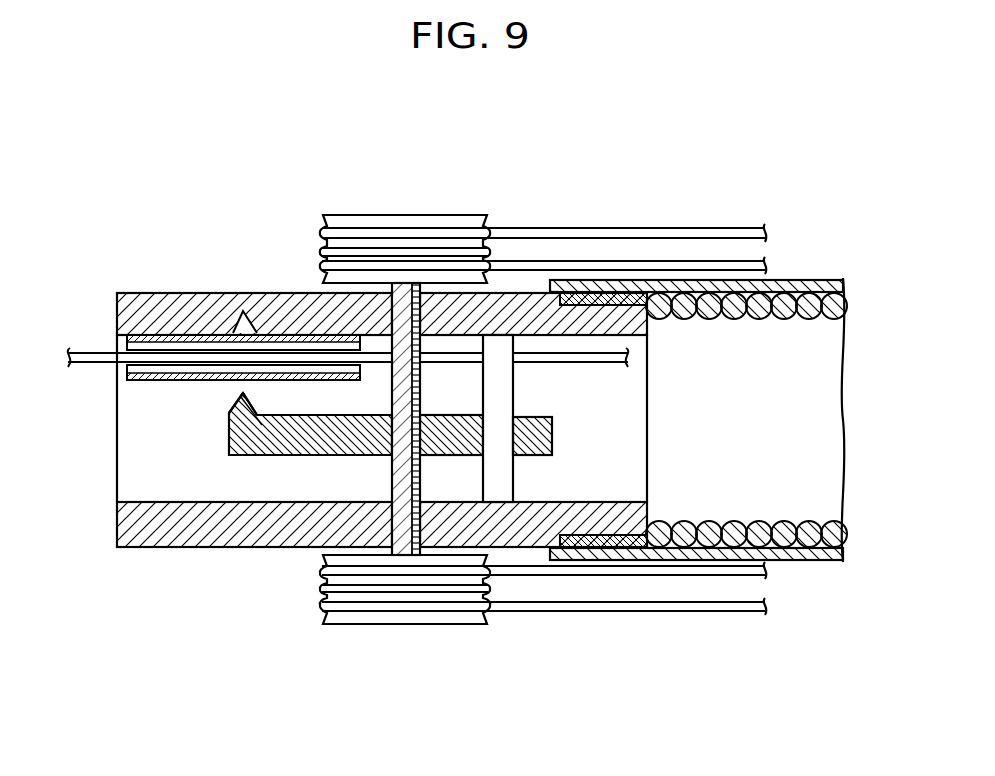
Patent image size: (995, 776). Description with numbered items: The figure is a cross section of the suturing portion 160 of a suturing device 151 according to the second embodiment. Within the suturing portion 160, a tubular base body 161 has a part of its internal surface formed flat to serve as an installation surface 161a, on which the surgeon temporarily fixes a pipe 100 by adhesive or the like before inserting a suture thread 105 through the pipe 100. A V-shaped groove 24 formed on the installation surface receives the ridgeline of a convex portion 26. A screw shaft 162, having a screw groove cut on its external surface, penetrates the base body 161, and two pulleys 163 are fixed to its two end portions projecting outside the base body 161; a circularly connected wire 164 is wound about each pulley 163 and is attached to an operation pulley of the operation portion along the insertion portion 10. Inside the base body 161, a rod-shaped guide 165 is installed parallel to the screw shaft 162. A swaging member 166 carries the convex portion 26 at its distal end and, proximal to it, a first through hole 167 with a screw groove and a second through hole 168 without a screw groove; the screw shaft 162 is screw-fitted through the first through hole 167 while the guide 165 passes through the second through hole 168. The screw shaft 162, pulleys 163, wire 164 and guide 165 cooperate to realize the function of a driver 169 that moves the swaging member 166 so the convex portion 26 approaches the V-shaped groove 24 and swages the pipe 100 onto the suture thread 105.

The insertion portion 10 is at (817, 267).
The V-shaped groove 24 is at (245, 322).
The convex portion 26 is at (243, 393).
The pipe 100 is at (153, 382).
The suture thread 105 is at (628, 366).
The suturing device 151 is at (534, 393).
The suturing portion 160 is at (382, 383).
The base body 161 is at (172, 548).
The installation surface 161a is at (177, 343).
The screw shaft 162 is at (423, 320).
The pulleys 163 is at (383, 214).
The wire 164 is at (562, 227).
The guide 165 is at (511, 387).
The swaging member 166 is at (232, 435).
The first through hole 167 is at (400, 444).
The second through hole 168 is at (513, 443).
The driver 169 is at (514, 643).